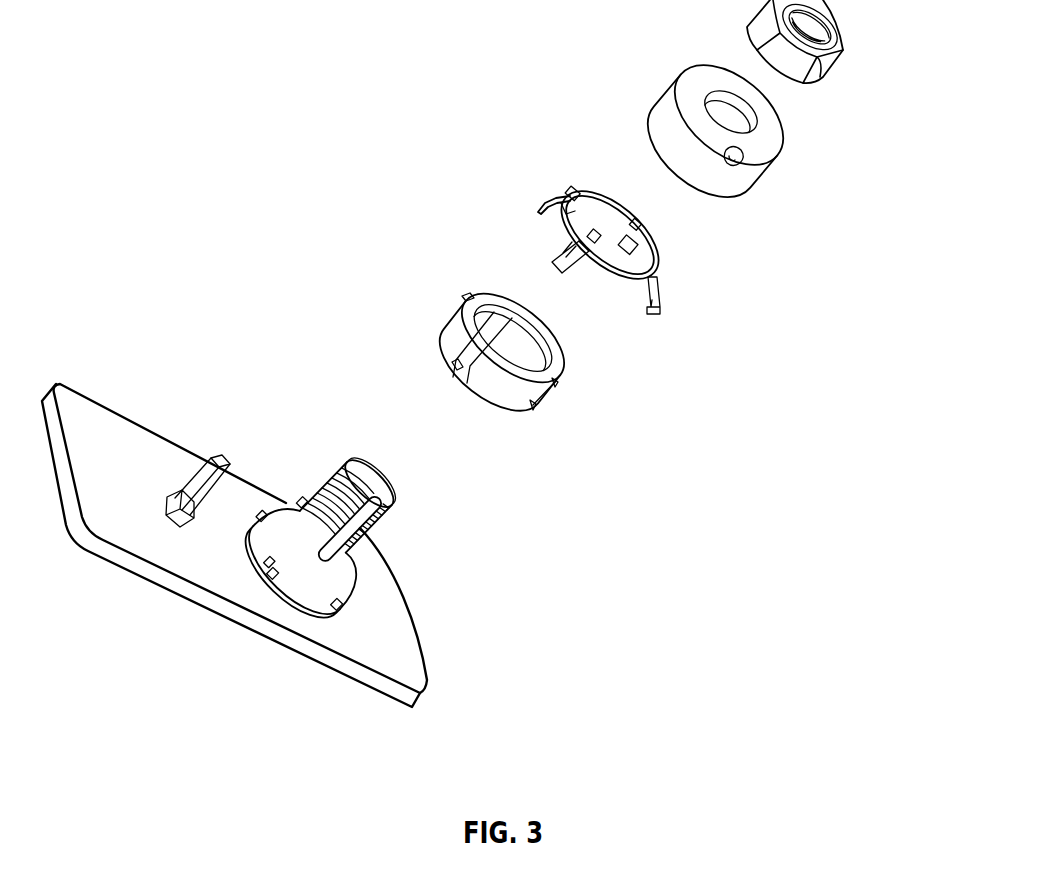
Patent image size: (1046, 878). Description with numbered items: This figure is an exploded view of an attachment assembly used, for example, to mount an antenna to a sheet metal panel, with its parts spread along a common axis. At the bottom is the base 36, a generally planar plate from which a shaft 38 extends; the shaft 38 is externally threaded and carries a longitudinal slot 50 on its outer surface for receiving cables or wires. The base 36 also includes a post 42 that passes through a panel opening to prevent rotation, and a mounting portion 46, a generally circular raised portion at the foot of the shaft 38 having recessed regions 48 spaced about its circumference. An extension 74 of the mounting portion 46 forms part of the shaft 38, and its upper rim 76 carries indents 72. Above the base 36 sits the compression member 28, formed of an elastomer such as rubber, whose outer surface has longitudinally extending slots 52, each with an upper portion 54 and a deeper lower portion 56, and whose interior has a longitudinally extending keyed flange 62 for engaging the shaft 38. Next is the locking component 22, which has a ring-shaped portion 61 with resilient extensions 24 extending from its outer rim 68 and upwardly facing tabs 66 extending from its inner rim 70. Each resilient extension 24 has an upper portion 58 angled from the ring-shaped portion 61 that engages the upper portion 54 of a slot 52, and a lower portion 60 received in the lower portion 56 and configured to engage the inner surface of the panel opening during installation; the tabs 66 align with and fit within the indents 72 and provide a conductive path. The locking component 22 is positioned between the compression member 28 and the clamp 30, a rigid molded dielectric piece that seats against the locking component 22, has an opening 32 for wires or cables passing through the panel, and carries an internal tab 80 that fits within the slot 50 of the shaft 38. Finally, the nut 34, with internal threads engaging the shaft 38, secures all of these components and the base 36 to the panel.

The locking component 22 is at (658, 254).
The resilient extensions 24 is at (661, 304).
The compression member 28 is at (564, 360).
The clamp 30 is at (773, 147).
The opening 32 is at (740, 162).
The nut 34 is at (821, 73).
The base 36 is at (408, 657).
The shaft 38 is at (380, 484).
The post 42 is at (192, 480).
The mounting portion 46 is at (350, 580).
The recessed regions 48 is at (272, 580).
The slot 50 is at (385, 514).
The slots 52 is at (452, 376).
The upper portion 54 is at (443, 340).
The lower portion 56 is at (462, 378).
The upper portion 58 is at (580, 258).
The lower portion 60 is at (556, 264).
The ring-shaped portion 61 is at (655, 250).
The flange 62 is at (511, 313).
The tabs 66 is at (590, 197).
The outer rim 68 is at (563, 221).
The inner rim 70 is at (545, 211).
The indents 72 is at (303, 502).
The extension 74 is at (282, 528).
The upper rim 76 is at (365, 551).
The internal tab 80 is at (752, 127).